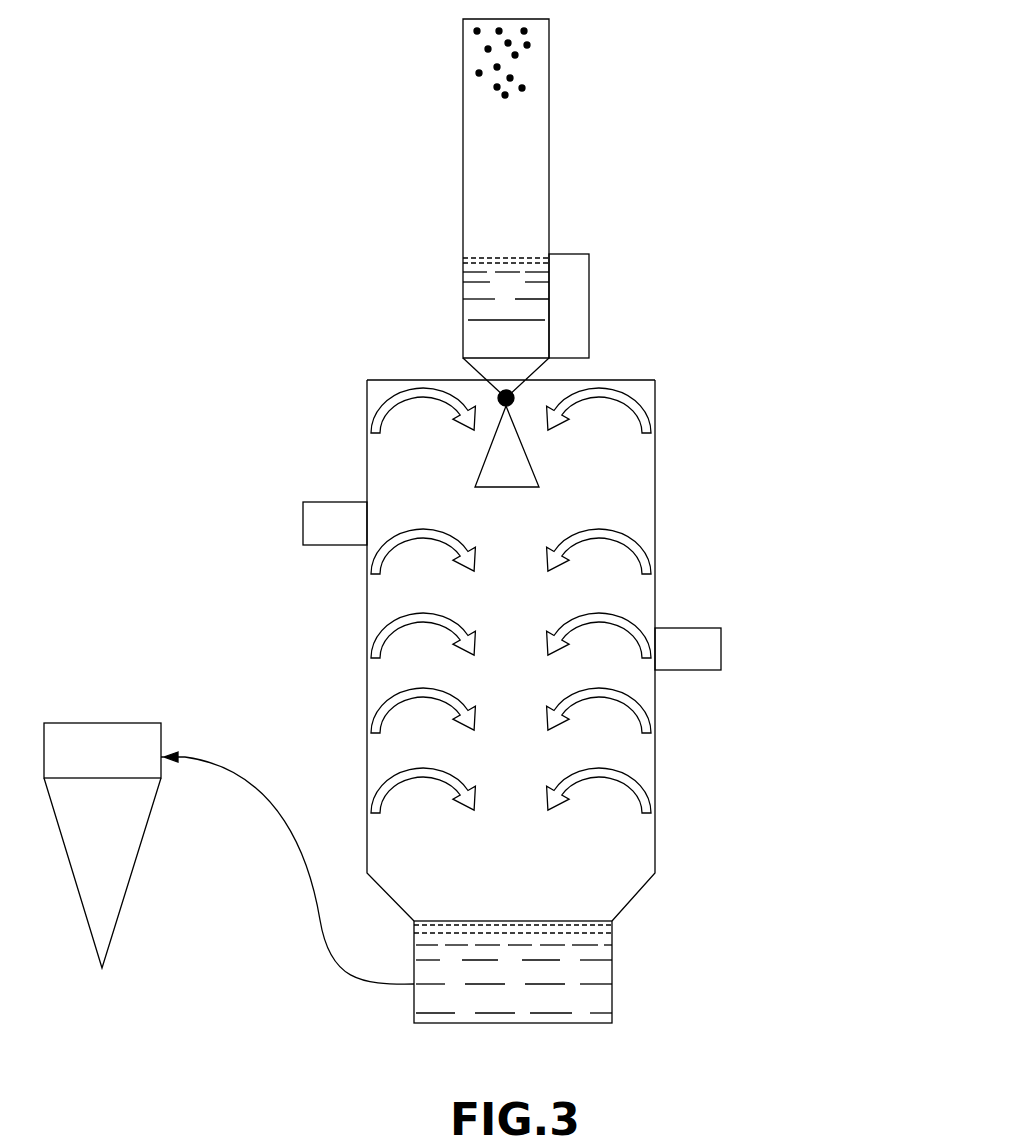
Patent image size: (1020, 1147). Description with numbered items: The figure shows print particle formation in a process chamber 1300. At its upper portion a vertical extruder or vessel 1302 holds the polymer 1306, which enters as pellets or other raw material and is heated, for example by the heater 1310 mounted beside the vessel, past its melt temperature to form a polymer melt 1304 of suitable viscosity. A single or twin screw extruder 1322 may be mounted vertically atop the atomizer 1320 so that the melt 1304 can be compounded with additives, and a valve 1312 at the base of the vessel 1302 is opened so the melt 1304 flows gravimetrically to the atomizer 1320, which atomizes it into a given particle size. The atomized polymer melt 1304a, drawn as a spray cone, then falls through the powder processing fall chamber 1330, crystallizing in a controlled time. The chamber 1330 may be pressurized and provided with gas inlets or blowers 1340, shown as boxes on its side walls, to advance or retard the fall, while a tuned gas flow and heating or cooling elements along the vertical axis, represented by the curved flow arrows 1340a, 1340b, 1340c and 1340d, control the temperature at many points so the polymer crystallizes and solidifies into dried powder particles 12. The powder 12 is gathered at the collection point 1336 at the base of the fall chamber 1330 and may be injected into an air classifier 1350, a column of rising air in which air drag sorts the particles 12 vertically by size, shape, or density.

The process chamber 1300 is at (262, 123).
The vertical extruder or vessel 1302 is at (549, 211).
The polymer melt 1304 is at (463, 313).
The atomized polymer melt 1304a is at (497, 448).
The polymer 1306 is at (522, 70).
The heater 1310 is at (590, 300).
The valve 1312 is at (522, 380).
The atomizer 1320 is at (498, 398).
The single or twin screw extruder 1322 is at (463, 260).
The powder processing fall chamber 1330 is at (655, 497).
The collection point 1336 is at (612, 960).
The gas inlet/outlet 1340 is at (300, 518).
The gas flow 1340a is at (655, 421).
The gas flow 1340b is at (655, 565).
The gas flow 1340c is at (372, 652).
The gas flow 1340d is at (655, 782).
The air classifier 1350 is at (133, 866).
The print particle 12 is at (612, 1008).